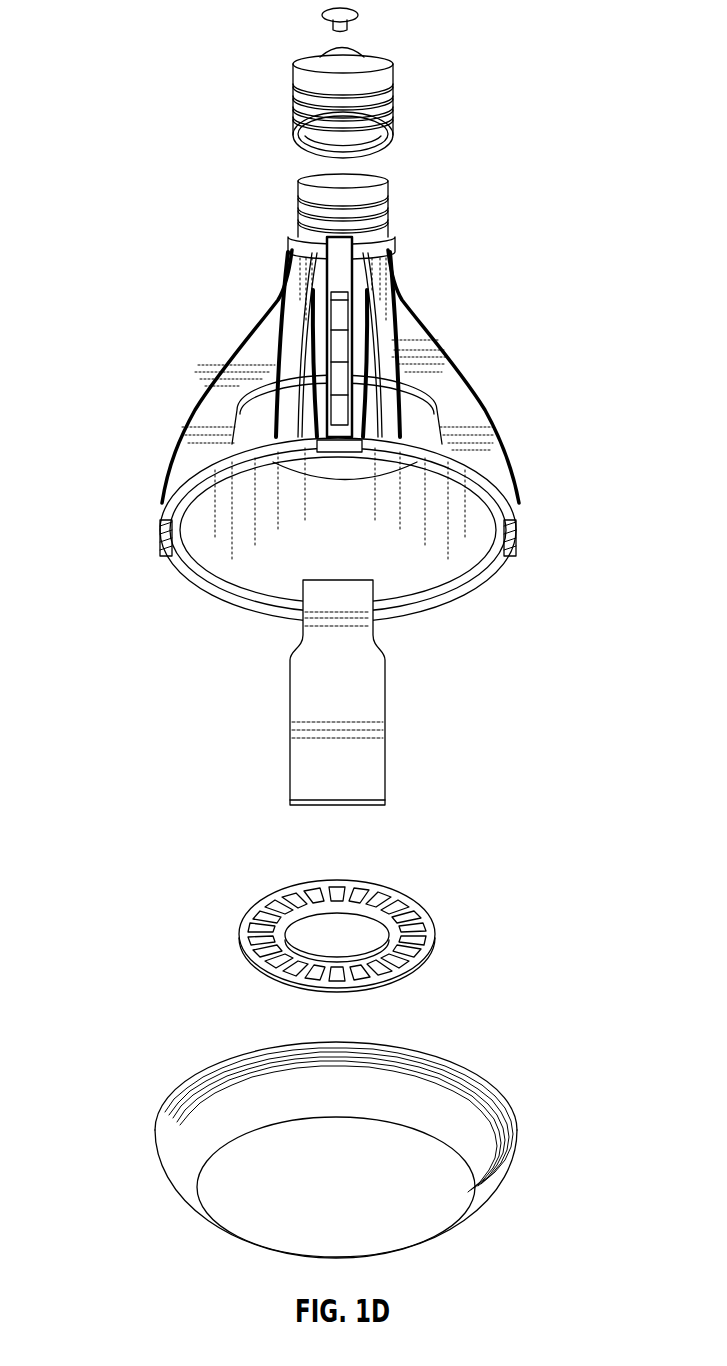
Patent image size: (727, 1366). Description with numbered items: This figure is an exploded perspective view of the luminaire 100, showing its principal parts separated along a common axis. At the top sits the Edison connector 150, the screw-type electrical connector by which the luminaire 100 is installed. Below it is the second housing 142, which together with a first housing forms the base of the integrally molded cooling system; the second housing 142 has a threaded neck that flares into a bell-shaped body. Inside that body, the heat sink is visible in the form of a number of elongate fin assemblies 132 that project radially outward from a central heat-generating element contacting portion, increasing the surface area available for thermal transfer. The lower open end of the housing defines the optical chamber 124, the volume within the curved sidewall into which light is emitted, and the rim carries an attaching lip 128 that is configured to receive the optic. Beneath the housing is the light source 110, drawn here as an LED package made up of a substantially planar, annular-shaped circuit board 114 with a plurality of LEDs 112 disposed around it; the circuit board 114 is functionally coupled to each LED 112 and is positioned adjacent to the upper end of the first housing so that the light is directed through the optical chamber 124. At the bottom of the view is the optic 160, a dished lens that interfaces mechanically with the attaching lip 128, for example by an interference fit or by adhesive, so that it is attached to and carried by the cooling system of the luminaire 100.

The luminaire 100 is at (130, 75).
The Edison connector 150 is at (392, 85).
The second housing 142 is at (400, 233).
The fin assemblies 132 is at (333, 388).
The optical chamber 124 is at (475, 514).
The attaching lip 128 is at (170, 560).
The light source 110 is at (441, 929).
The circuit board 114 is at (280, 893).
The LED 112 is at (288, 966).
The optic 160 is at (496, 1191).